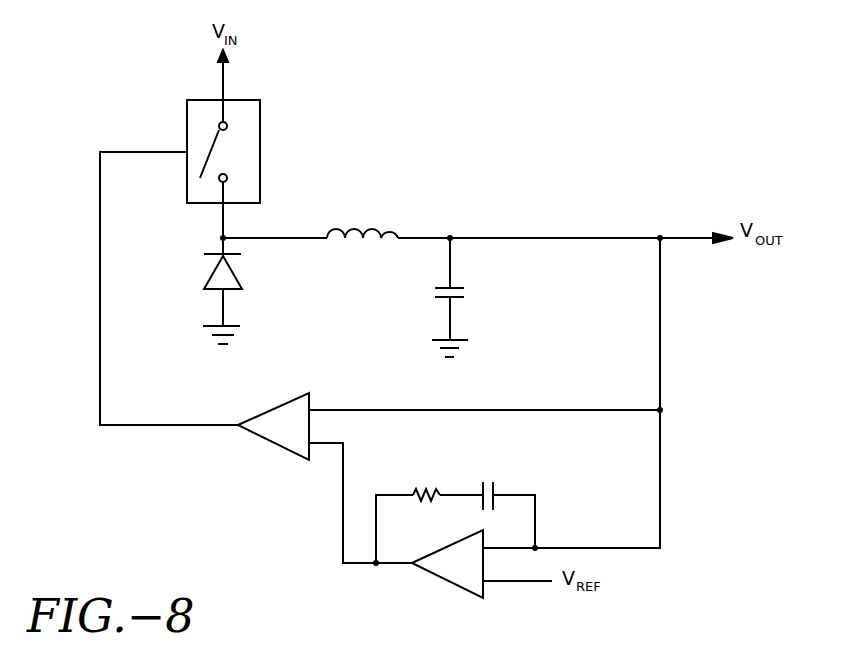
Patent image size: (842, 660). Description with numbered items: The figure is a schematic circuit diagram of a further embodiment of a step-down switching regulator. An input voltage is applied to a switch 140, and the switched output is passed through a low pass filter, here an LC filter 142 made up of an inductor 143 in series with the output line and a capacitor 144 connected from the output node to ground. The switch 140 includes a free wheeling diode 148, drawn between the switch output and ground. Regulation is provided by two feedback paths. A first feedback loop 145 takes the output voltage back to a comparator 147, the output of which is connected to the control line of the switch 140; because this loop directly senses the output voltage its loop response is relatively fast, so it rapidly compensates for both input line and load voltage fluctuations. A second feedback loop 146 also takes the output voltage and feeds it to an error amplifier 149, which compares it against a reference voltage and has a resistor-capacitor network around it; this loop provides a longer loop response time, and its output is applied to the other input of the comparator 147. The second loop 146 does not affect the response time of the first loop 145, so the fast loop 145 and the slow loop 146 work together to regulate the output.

The switch 140 is at (276, 116).
The LC filter 142 is at (451, 210).
The inductor 143 is at (360, 255).
The capacitor 144 is at (470, 304).
The first feedback loop 145 is at (635, 335).
The second feedback loop 146 is at (633, 435).
The comparator 147 is at (270, 401).
The free wheeling diode 148 is at (203, 269).
The error amplifier 149 is at (438, 590).